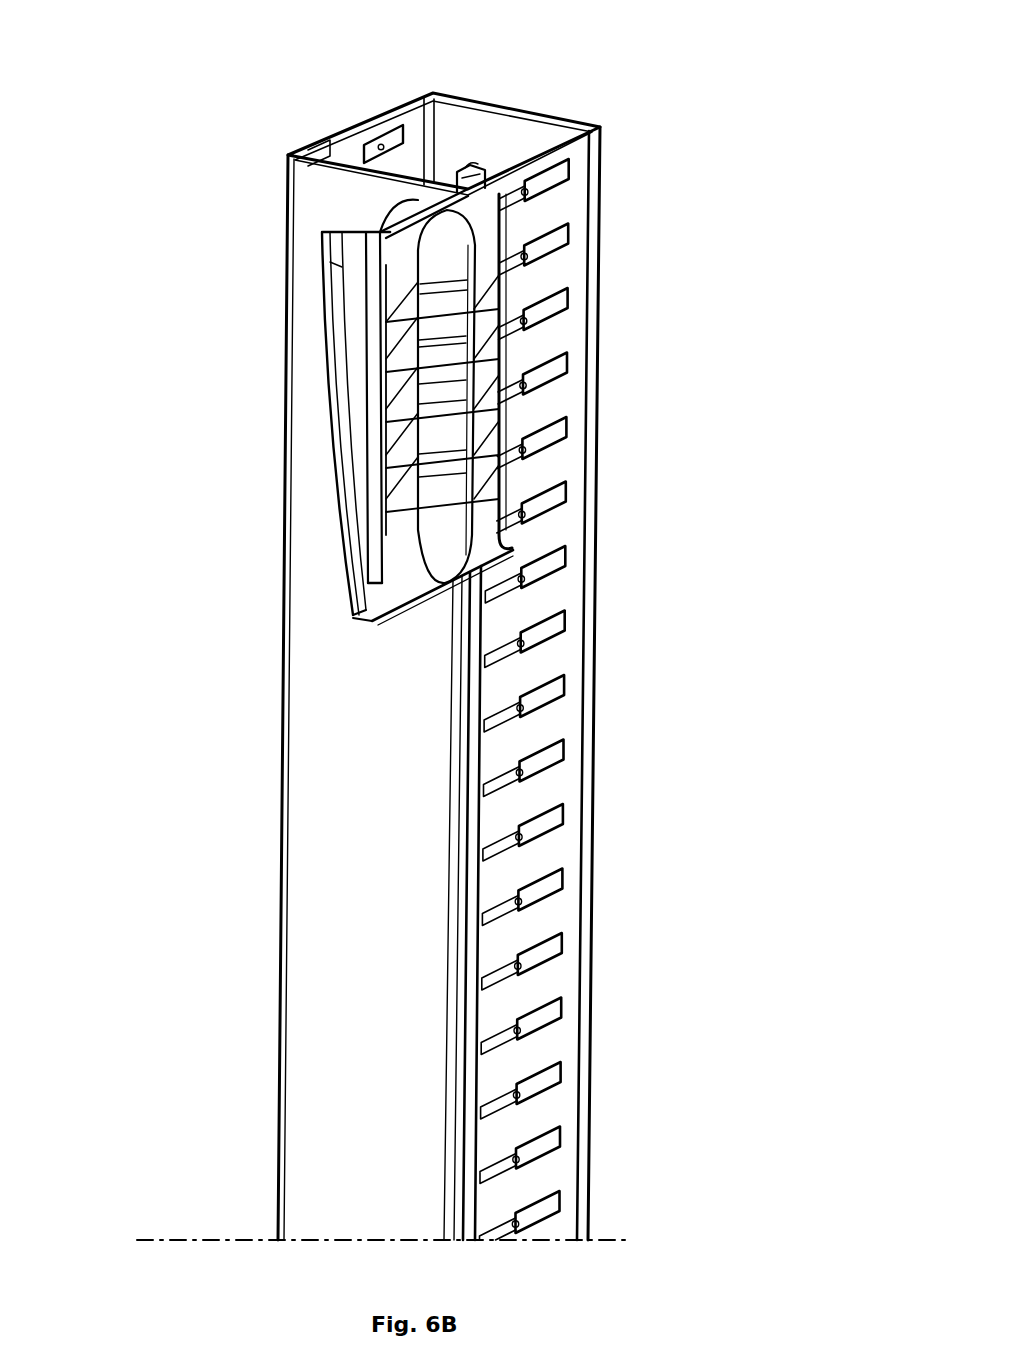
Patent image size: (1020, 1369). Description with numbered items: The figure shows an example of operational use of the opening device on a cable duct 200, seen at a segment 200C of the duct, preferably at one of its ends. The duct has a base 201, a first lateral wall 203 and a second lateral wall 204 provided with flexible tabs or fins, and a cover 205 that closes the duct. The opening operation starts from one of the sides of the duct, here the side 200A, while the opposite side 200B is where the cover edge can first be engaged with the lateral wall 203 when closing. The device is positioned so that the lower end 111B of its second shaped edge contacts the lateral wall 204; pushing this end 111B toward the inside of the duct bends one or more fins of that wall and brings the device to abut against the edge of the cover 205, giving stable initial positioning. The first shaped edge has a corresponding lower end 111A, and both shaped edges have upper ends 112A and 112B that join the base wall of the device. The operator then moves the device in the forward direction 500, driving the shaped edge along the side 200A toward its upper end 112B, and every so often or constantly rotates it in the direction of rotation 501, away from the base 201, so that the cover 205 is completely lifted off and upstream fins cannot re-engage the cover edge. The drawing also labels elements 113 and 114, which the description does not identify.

The cable duct 200 is at (627, 808).
The side 200A is at (614, 958).
The side 200B is at (235, 120).
The segment 200C is at (563, 72).
The base 201 is at (555, 117).
The lateral wall 203 is at (353, 125).
The lateral wall 204 is at (563, 722).
The cover 205 is at (317, 890).
The end of first shaped edge 111A is at (320, 250).
The end of second shaped edge 111B is at (484, 152).
The end of first shaped edge 112A is at (365, 623).
The end of second shaped edge 112B is at (515, 534).
The mounting plate 113 is at (505, 480).
The spring 114 is at (340, 430).
The forward direction 500 is at (130, 712).
The direction of rotation 501 is at (253, 178).